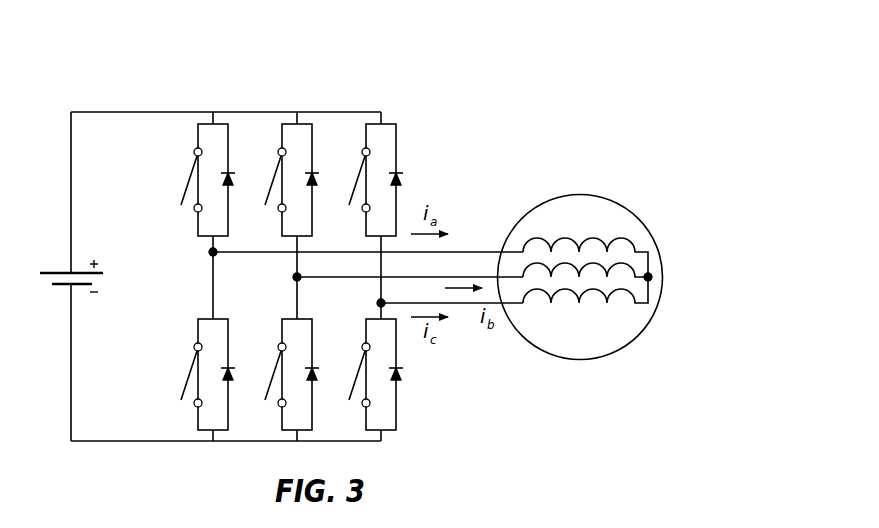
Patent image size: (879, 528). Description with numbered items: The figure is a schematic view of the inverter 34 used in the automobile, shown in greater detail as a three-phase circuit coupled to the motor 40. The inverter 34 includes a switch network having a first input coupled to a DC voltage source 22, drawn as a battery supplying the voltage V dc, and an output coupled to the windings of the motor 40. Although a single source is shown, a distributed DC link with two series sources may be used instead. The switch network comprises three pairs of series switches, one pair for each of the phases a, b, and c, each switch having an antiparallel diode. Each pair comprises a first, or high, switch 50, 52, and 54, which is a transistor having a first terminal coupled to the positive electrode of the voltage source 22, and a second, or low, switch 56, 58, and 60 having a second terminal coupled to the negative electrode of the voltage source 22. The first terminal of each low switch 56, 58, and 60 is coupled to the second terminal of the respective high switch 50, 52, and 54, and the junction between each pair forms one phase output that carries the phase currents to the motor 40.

The DC power source (battery) 22 is at (56, 262).
The inverter 34 is at (133, 112).
The motor 40 is at (580, 195).
The first switch 50 is at (186, 174).
The first switch 52 is at (270, 174).
The first switch 54 is at (354, 174).
The second switch 56 is at (186, 369).
The second switch 58 is at (270, 369).
The second switch 60 is at (354, 369).